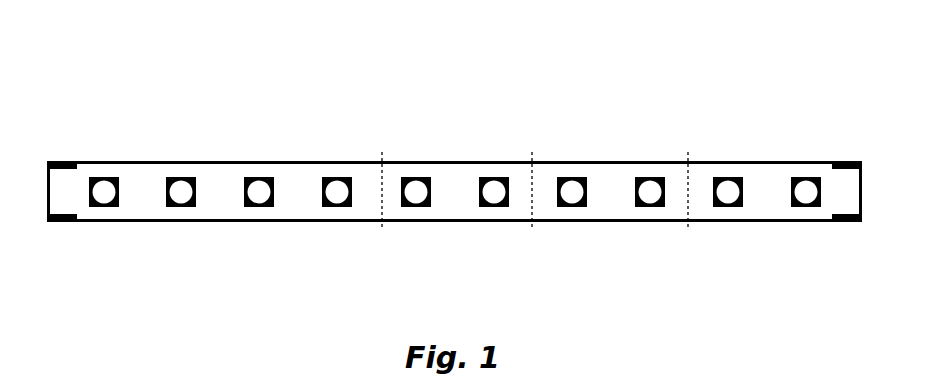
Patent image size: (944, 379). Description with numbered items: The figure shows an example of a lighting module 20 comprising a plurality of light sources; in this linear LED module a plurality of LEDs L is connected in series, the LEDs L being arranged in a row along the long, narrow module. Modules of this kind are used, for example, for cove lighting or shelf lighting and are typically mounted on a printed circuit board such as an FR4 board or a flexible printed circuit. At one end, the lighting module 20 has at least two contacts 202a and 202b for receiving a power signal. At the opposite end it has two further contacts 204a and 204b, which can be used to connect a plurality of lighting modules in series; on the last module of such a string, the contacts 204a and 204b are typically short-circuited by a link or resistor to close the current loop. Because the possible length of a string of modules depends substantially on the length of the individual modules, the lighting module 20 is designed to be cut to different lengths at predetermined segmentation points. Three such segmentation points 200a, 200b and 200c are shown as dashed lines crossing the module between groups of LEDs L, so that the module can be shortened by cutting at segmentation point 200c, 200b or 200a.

The lighting module 20 is at (212, 88).
The contact 202a is at (58, 162).
The contact 202b is at (58, 223).
The further contact 204a is at (848, 162).
The further contact 204b is at (848, 223).
The segmentation point 200a is at (382, 230).
The segmentation point 200b is at (532, 230).
The segmentation point 200c is at (688, 230).
The LED L is at (177, 178).